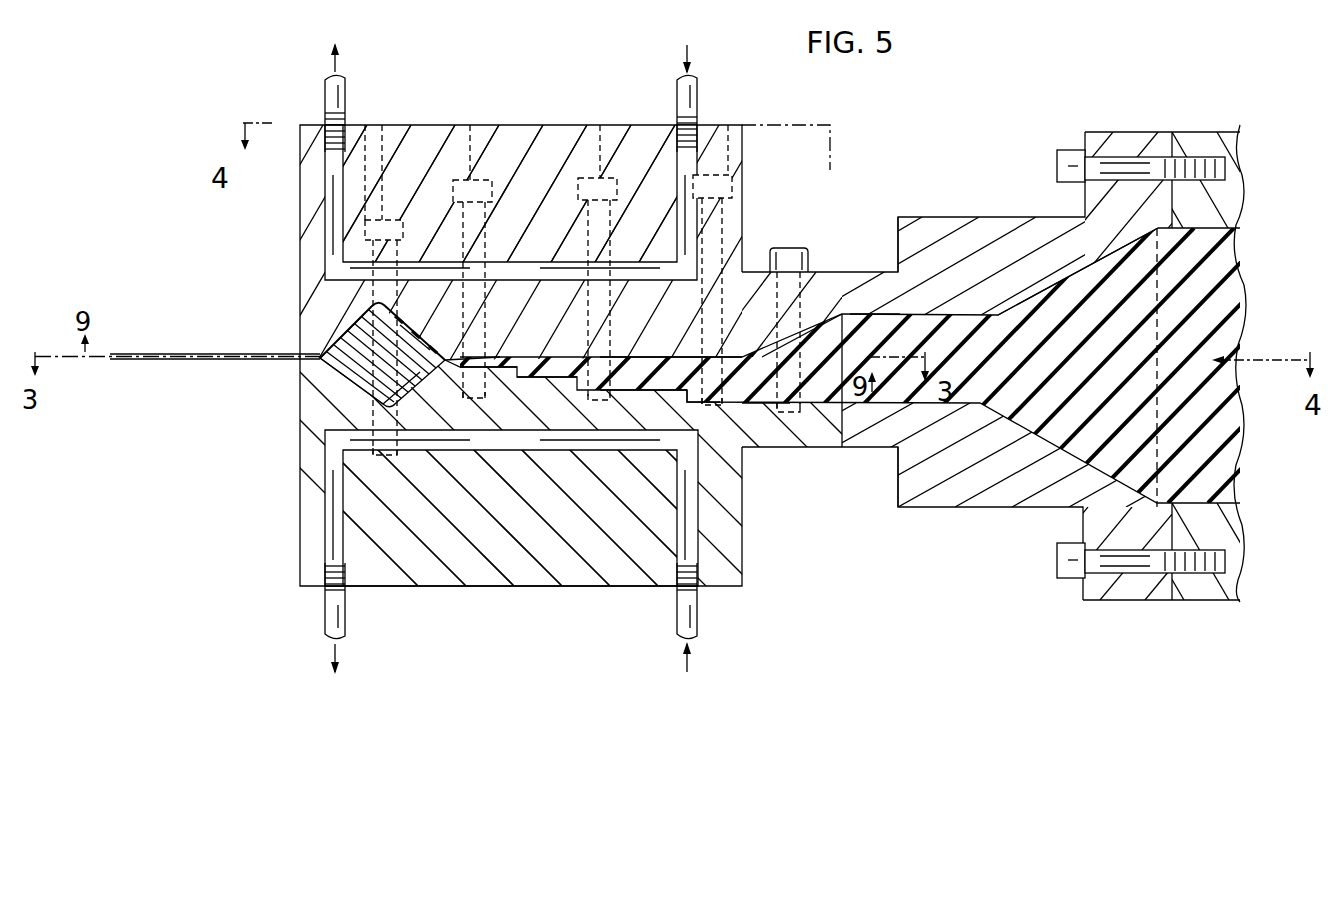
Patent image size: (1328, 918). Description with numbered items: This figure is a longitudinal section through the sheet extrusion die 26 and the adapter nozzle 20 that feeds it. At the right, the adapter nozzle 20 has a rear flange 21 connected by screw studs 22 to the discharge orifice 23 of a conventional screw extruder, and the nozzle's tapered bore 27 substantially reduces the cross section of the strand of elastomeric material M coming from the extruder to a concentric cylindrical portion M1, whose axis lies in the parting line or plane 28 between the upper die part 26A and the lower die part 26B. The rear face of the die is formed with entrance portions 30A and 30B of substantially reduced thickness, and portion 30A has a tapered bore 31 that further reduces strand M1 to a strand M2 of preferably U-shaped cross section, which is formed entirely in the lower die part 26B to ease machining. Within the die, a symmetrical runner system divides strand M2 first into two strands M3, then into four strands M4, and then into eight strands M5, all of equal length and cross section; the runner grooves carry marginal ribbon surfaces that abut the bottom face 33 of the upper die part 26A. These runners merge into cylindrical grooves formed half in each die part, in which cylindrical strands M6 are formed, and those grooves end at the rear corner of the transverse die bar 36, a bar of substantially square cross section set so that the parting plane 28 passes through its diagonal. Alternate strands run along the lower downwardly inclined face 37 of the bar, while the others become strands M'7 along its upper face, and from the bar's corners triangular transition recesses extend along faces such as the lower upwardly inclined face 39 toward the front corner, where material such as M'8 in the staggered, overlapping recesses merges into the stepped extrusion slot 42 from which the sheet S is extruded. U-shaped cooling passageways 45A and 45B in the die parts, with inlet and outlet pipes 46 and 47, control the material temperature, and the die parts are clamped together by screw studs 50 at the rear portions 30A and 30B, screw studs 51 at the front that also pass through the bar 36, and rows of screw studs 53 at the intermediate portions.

The adapter nozzle 20 is at (950, 217).
The rear flange 21 is at (1112, 132).
The screw studs 22 is at (1060, 152).
The discharge orifice 23 is at (1200, 132).
The sheet extrusion die 26 is at (272, 578).
The upper die part 26A is at (535, 125).
The lower die part 26B is at (530, 586).
The tapered bore 27 is at (1048, 300).
The parting line or plane 28 is at (655, 357).
The entrance portion 30A is at (757, 272).
The entrance portion 30B is at (800, 447).
The tapered bore 31 is at (820, 325).
The bottom face 33 is at (680, 394).
The transverse die bar 36 is at (420, 372).
The lower downwardly inclined face 37 is at (410, 388).
The lower upwardly inclined face 39 is at (355, 386).
The stepped extrusion slot 42 is at (312, 352).
The cooling passageway 45A is at (335, 266).
The cooling passageway 45B is at (335, 458).
The inlet pipe 46 is at (697, 95).
The outlet pipe 47 is at (325, 100).
The screw studs 50 is at (795, 248).
The screw studs 51 is at (380, 215).
The screw studs 53 is at (470, 180).
The sheet S is at (195, 352).
The elastomeric material M is at (768, 367).
The concentric cylindrical portion M1 is at (875, 320).
The strand M2 is at (752, 410).
The strands M3 is at (612, 390).
The strands M4 is at (552, 378).
The strands M5 is at (497, 370).
The cylindrical strands M6 is at (485, 357).
The strands M'7 is at (424, 319).
The material M'8 is at (342, 313).